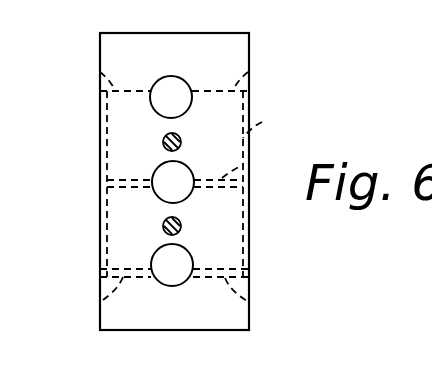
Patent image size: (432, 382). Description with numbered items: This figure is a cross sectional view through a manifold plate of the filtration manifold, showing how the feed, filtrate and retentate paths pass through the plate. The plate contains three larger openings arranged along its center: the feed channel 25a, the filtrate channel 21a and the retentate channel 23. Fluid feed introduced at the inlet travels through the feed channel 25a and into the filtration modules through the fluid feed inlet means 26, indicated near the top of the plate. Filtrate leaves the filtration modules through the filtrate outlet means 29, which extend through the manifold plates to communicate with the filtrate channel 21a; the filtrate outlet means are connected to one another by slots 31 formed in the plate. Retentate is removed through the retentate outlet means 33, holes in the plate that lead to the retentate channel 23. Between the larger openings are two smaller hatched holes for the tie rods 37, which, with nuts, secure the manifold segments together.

The feed channel 25a is at (185, 78).
The filtrate channel 21a is at (188, 163).
The retentate channel 23 is at (190, 247).
The tie rods 37 is at (163, 141).
The fluid feed inlet means 26 is at (87, 65).
The slots 31 is at (100, 138).
The filtrate outlet means 29 is at (249, 165).
The retentate outlet means 33 is at (98, 303).